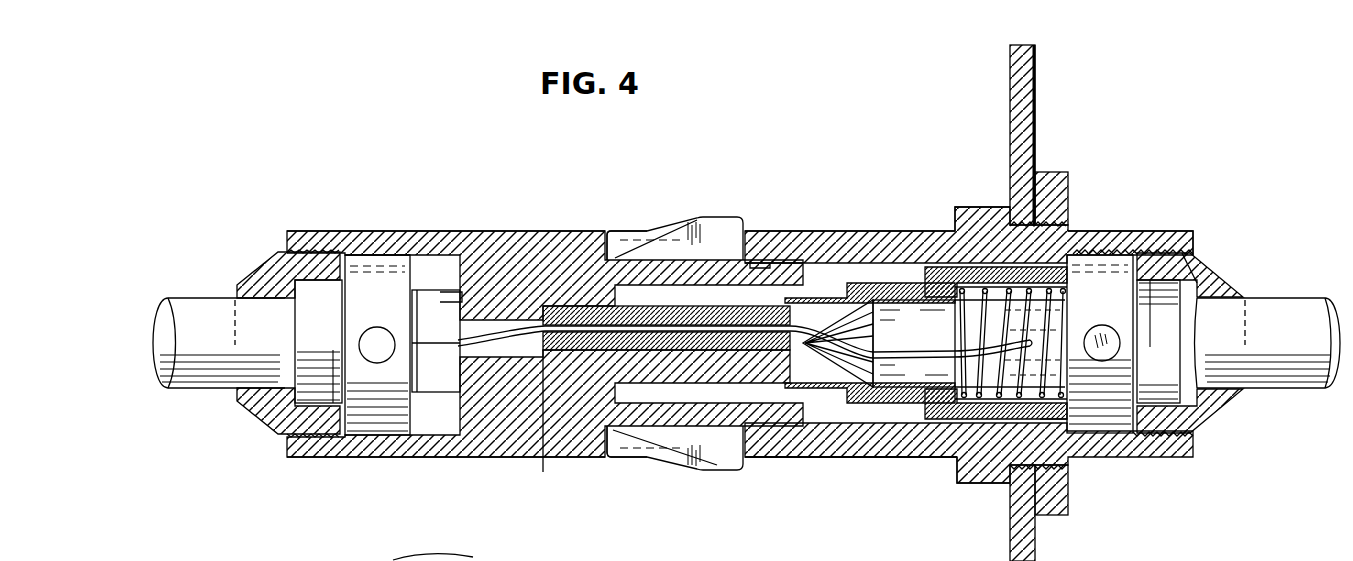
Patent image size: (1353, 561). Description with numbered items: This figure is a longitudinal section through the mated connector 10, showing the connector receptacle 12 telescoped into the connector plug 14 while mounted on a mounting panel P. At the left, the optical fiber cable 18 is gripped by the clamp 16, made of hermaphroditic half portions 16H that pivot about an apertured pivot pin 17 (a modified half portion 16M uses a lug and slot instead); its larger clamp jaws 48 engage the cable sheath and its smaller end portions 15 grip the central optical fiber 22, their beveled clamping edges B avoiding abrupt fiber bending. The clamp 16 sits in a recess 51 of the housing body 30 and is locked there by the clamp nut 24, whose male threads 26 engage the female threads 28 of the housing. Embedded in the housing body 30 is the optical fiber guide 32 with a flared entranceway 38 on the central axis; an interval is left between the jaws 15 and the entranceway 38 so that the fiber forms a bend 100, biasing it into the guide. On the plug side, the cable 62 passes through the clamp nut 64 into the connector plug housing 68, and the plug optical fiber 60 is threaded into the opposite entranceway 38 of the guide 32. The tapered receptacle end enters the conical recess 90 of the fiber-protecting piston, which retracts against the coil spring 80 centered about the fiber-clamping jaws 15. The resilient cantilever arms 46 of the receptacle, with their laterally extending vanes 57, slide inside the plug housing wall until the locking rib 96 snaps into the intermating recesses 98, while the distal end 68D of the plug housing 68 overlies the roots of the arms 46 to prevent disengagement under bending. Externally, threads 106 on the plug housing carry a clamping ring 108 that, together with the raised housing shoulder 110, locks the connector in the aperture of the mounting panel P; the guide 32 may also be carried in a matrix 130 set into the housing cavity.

The connector 10 is at (809, 116).
The connector receptacle 12 is at (497, 460).
The connector plug 14 is at (890, 464).
The end portions (fiber clamping jaws) 15 is at (440, 328).
The clamp 16 is at (387, 252).
The hermaphroditic clamp half portion 16H is at (473, 555).
The modified hermaphroditic clamp half portion 16M is at (1177, 560).
The apertured pivot pin 17 is at (373, 360).
The optical fiber cable 18 is at (207, 340).
The optical fiber 22 is at (545, 308).
The clamp nut 24 is at (258, 283).
The clamp nut male threads 26 is at (288, 438).
The female threads 28 is at (346, 254).
The housing body (shell) 30 is at (541, 228).
The optical fiber guide 32 is at (543, 472).
The entranceway 38 is at (838, 299).
The cantilever arms 46 is at (660, 234).
The clamp jaws 48 is at (325, 324).
The recess 51 is at (450, 295).
The vanes 57 is at (719, 224).
The optical fiber 60 is at (990, 422).
The cable 62 is at (1287, 337).
The clamp nut 64 is at (1233, 263).
The connector plug housing 68 is at (883, 229).
The distal end 68D is at (609, 232).
The coil spring 80 is at (1062, 436).
The conical recess 90 is at (772, 358).
The locking rib 96 is at (758, 264).
The intermating recesses 98 is at (766, 270).
The bend 100 is at (480, 352).
The threads 106 is at (1088, 248).
The clamping ring 108 is at (1060, 174).
The raised housing shoulder 110 is at (981, 208).
The matrix 130 is at (917, 420).
The beveled clamping edges B is at (487, 347).
The mounting panel P is at (1023, 95).